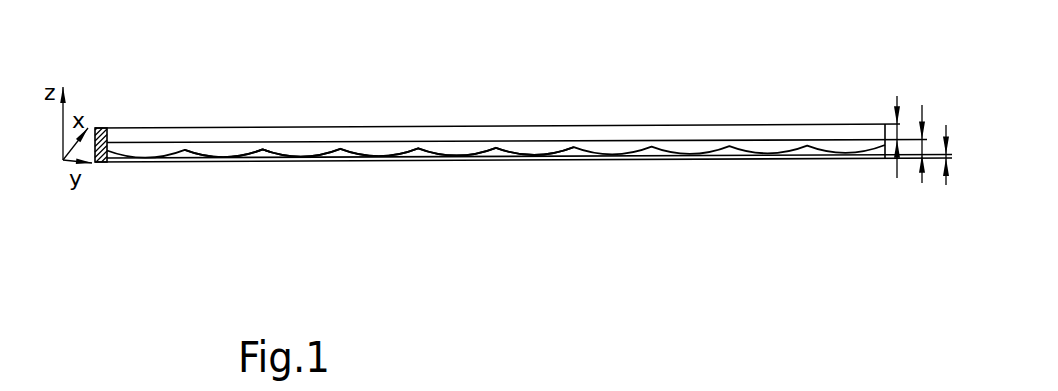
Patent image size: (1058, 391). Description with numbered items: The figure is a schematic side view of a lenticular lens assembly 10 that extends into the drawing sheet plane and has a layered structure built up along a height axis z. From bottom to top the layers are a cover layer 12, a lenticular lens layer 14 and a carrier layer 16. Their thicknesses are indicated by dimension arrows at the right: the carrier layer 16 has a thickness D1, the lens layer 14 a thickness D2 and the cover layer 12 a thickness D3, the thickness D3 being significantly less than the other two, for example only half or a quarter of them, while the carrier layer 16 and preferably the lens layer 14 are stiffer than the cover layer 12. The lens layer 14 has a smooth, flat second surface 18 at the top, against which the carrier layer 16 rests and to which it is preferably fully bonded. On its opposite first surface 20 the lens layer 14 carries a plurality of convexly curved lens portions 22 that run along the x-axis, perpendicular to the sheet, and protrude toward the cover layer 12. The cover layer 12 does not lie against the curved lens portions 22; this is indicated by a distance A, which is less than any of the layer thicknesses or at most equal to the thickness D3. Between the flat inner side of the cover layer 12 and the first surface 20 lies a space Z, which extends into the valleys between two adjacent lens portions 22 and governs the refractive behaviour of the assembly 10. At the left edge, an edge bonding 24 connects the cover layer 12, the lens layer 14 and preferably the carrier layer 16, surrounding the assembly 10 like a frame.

The lenticular lens assembly 10 is at (209, 88).
The cover layer 12 is at (760, 157).
The lenticular lens layer 14 is at (847, 147).
The carrier layer 16 is at (688, 132).
The second surface 18 is at (299, 142).
The first surface 20 is at (302, 160).
The lens portions 22 is at (378, 147).
The edge bonding 24 is at (104, 127).
The distance A is at (219, 160).
The space Z is at (263, 150).
The thickness of the carrier layer D1 is at (900, 72).
The thickness of the lenticular lens layer D2 is at (931, 101).
The thickness of the cover layer D3 is at (948, 177).